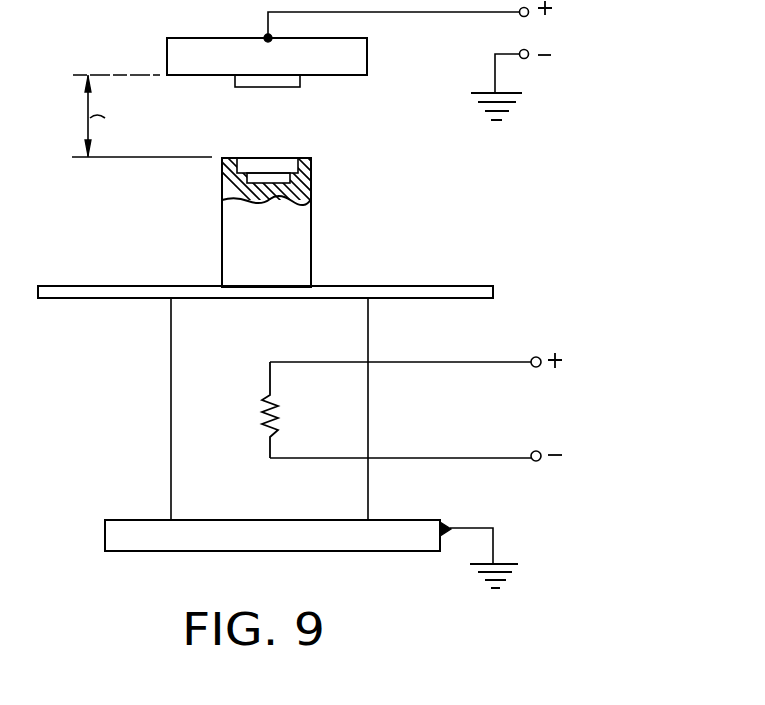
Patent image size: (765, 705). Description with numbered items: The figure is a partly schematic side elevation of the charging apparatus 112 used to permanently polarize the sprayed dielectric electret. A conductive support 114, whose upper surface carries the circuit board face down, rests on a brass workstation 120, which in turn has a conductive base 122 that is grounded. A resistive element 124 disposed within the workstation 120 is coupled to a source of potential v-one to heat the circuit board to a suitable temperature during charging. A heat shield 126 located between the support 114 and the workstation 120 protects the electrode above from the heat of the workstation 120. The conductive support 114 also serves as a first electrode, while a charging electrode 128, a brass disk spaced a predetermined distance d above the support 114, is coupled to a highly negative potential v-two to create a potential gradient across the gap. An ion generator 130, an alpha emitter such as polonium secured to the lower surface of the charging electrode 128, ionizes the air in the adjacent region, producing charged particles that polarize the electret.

The charging apparatus 112 is at (347, 294).
The conductive support 114 is at (298, 223).
The brass workstation 120 is at (358, 338).
The conductive base 122 is at (145, 528).
The resistive element 124 is at (282, 408).
The heat shield 126 is at (437, 299).
The charging electrode 128 is at (229, 14).
The ion generator 130 is at (260, 88).